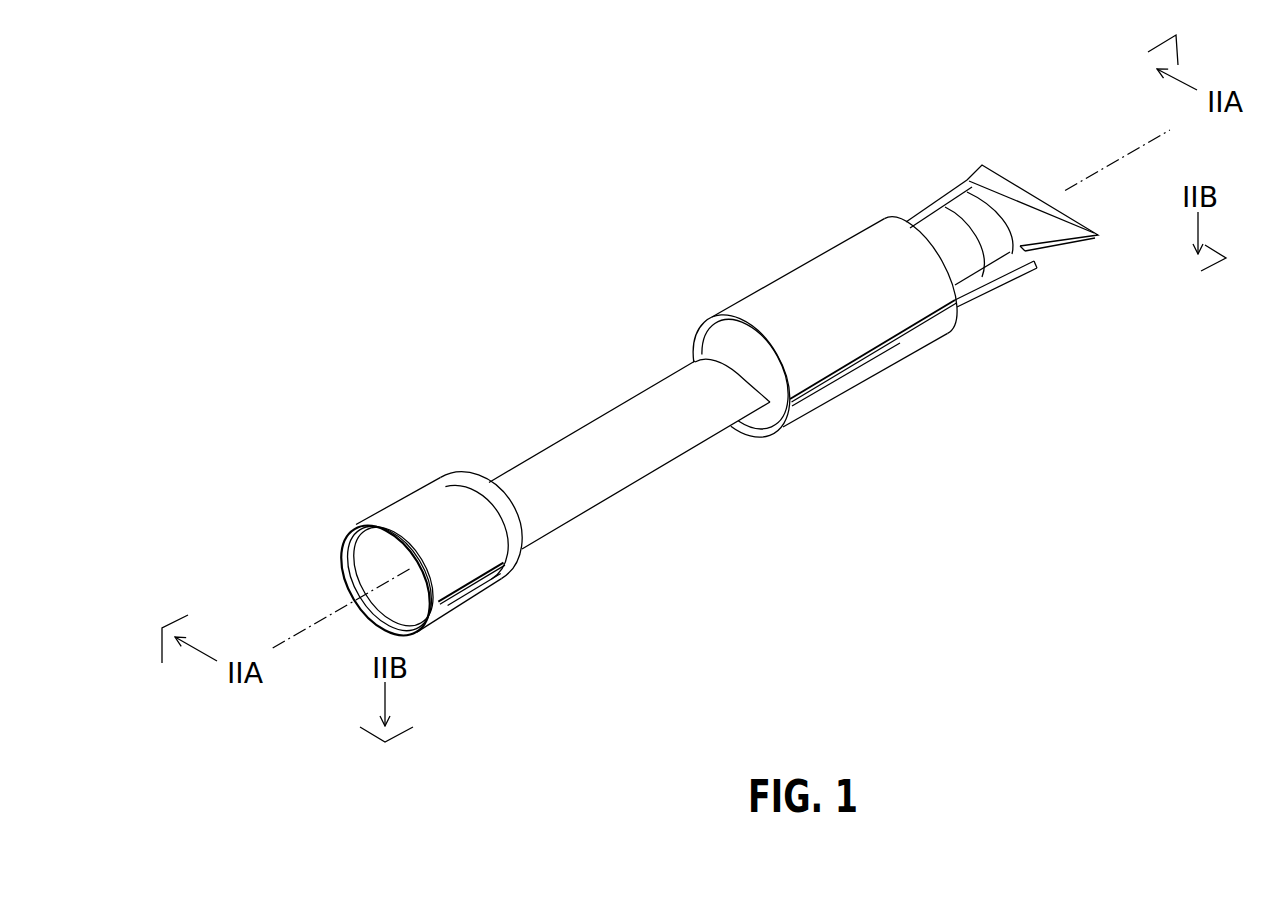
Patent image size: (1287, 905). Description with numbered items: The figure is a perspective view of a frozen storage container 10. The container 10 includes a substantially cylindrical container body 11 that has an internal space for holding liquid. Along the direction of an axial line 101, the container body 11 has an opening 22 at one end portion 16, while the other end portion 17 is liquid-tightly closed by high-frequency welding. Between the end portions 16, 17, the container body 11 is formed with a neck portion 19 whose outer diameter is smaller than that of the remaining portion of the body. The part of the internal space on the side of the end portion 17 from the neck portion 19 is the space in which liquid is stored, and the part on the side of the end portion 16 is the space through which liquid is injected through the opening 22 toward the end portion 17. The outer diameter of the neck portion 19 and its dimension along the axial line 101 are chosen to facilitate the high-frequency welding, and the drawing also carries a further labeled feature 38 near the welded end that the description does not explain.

The frozen storage container 10 is at (707, 295).
The container body 11 is at (896, 370).
The end portion 16 is at (432, 600).
The other end portion 17 is at (1018, 190).
The neck portion 19 is at (613, 427).
The opening 22 is at (363, 563).
The distal strip 38 is at (1022, 268).
The axial line 101 is at (1118, 159).